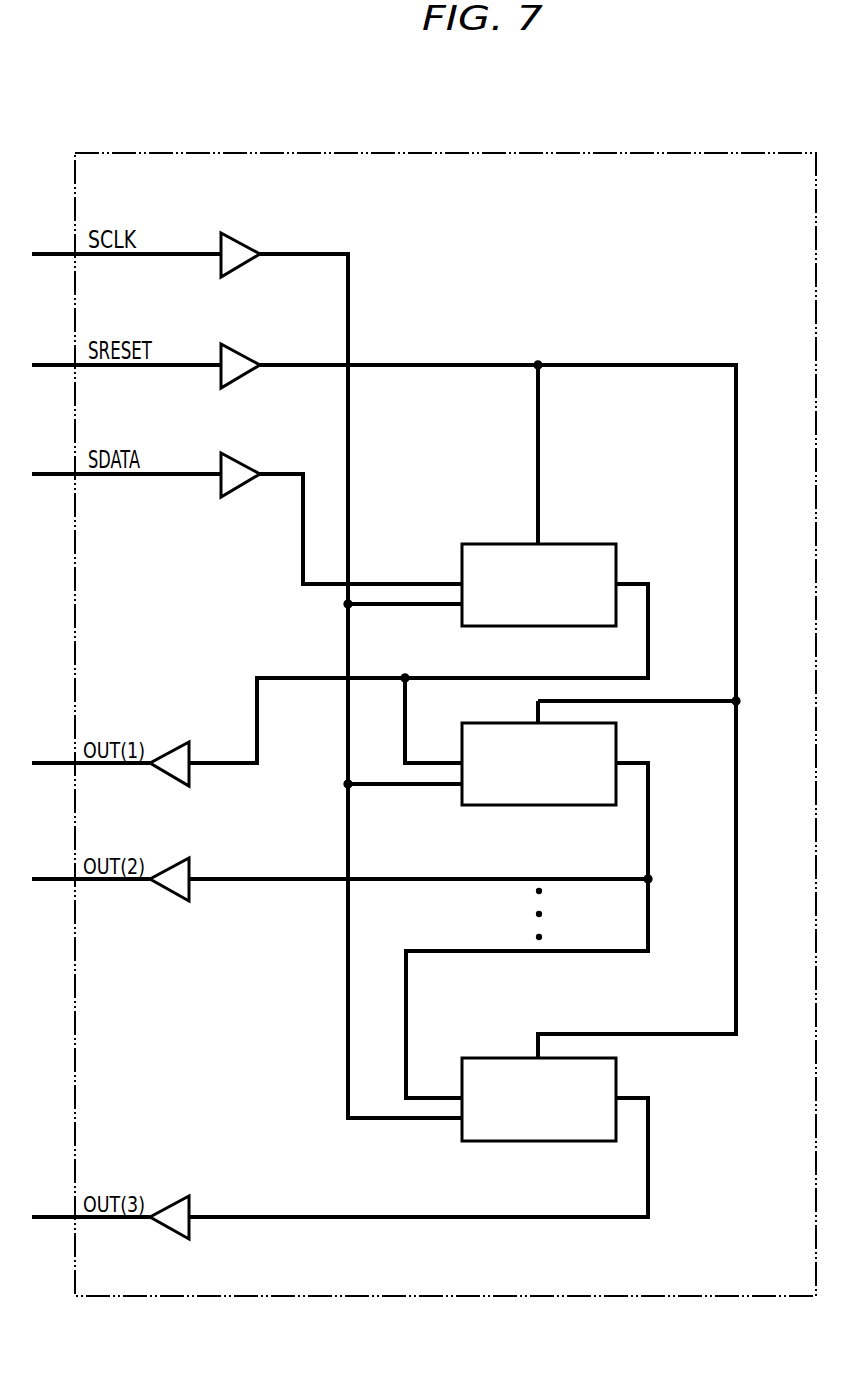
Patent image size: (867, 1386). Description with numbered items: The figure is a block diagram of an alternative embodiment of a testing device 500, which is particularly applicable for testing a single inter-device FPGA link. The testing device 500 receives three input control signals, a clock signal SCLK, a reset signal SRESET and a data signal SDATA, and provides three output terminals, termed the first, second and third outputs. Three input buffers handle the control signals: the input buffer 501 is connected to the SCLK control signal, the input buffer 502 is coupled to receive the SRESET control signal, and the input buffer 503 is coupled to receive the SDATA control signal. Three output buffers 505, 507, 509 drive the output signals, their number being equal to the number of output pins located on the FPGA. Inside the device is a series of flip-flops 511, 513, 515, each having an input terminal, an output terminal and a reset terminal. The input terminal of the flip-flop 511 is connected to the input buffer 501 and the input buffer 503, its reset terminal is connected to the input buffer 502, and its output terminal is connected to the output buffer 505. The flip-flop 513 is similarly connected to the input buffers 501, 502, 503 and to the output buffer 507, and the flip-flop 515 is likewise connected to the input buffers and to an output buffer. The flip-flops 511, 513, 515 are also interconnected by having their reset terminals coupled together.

The testing device 500 is at (500, 152).
The input buffer 501 is at (235, 268).
The input buffer 502 is at (235, 380).
The input buffer 503 is at (235, 489).
The output buffer 505 is at (175, 747).
The output buffer 507 is at (175, 863).
The output buffer 509 is at (175, 1200).
The flip-flop 511 is at (619, 566).
The flip-flop 513 is at (619, 746).
The flip-flop 515 is at (619, 1081).